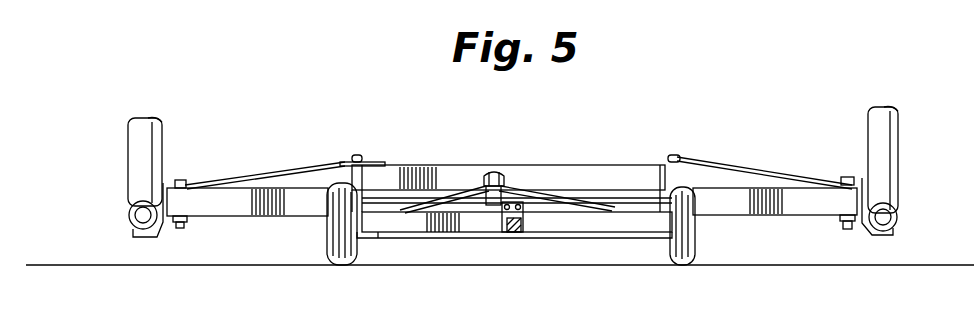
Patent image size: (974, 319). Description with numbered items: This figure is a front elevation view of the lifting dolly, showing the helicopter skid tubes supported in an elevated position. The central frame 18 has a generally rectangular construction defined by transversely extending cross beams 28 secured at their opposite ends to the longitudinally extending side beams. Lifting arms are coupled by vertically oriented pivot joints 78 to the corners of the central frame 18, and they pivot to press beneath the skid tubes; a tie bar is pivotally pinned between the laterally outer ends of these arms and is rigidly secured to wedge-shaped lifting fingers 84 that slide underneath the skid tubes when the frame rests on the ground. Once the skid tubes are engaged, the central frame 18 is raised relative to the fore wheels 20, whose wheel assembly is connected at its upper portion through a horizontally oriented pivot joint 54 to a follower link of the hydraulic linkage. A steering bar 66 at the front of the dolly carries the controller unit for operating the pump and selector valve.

The central frame 18 is at (618, 147).
The fore wheels 20 is at (683, 253).
The cross beams 28 is at (413, 165).
The pivot joint 54 is at (502, 177).
The steering bar 66 is at (517, 235).
The pivot joints 78 is at (672, 153).
The lifting fingers 84 is at (880, 237).